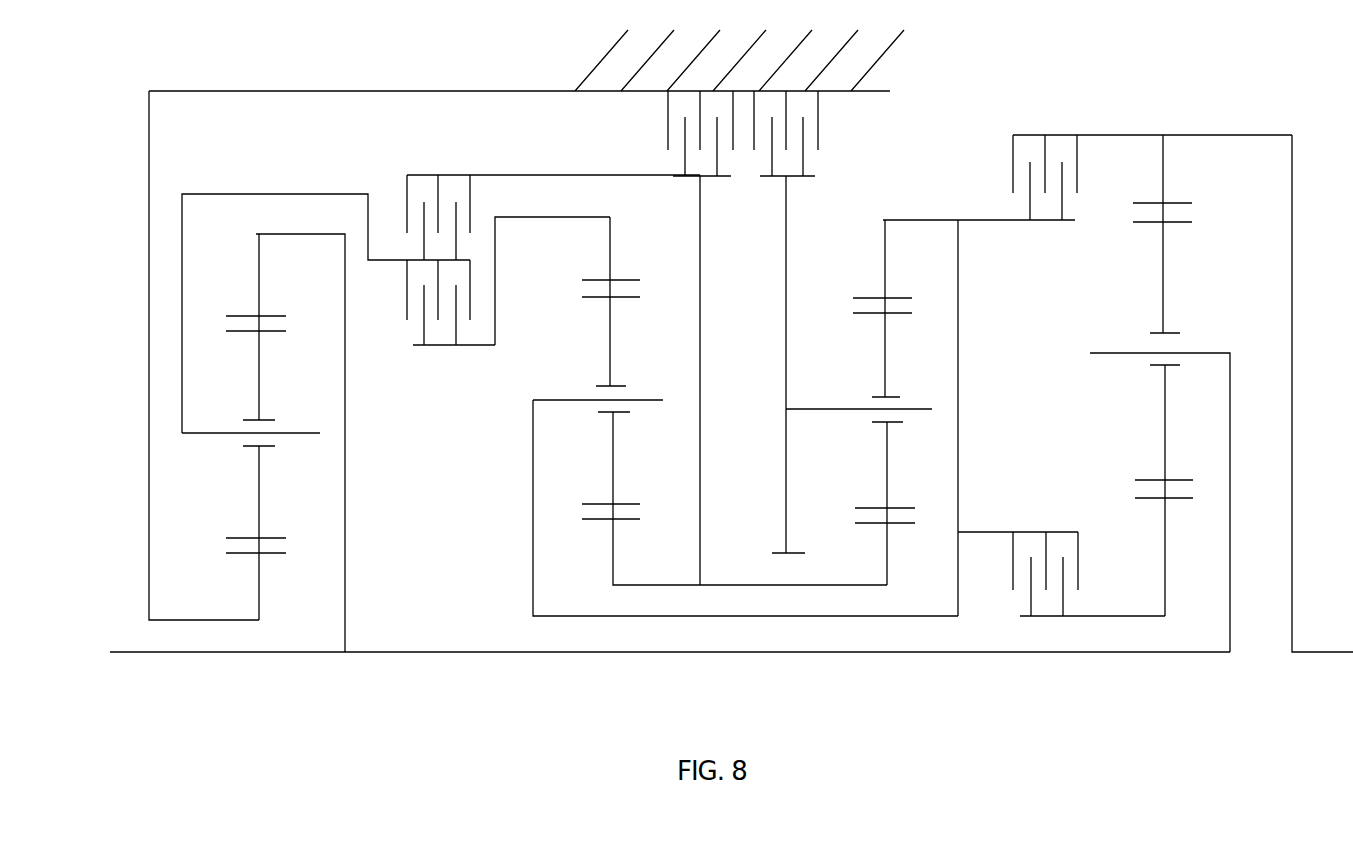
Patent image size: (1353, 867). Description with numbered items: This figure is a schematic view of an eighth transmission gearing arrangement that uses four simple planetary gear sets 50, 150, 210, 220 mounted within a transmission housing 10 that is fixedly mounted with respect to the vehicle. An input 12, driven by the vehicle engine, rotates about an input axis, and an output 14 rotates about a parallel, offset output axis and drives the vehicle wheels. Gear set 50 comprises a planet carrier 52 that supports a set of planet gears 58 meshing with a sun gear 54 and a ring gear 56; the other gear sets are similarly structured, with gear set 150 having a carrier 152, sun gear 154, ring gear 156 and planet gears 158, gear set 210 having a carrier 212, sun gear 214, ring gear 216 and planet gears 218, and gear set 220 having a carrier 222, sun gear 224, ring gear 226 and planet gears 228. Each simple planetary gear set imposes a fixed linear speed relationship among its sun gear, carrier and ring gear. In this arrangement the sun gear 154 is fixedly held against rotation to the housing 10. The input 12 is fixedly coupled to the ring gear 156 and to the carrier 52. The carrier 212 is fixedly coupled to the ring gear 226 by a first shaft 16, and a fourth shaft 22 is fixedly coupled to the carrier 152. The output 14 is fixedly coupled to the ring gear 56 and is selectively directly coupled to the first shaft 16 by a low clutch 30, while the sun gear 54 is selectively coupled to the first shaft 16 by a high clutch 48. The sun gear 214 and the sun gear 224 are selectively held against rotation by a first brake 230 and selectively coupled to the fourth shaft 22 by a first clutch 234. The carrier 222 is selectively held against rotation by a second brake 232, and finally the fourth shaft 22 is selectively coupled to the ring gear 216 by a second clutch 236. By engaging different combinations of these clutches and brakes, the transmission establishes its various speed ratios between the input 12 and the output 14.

The transmission housing 10 is at (608, 52).
The input 12 is at (378, 652).
The output 14 is at (1335, 652).
The first shaft 16 is at (552, 612).
The fourth shaft 22 is at (247, 195).
The low clutch 30 is at (1033, 135).
The high clutch 48 is at (1057, 530).
The planetary gear set 50 is at (1154, 423).
The planet carrier 52 is at (1107, 355).
The sun gear 54 is at (1165, 585).
The ring gear 56 is at (1162, 163).
The planet gears 58 is at (1163, 287).
The planetary gear set 150 is at (248, 472).
The carrier 152 is at (183, 435).
The sun gear 154 is at (259, 575).
The ring gear 156 is at (258, 278).
The planet gears 158 is at (258, 363).
The planetary gear set 210 is at (691, 443).
The carrier 212 is at (540, 397).
The sun gear 214 is at (613, 560).
The ring gear 216 is at (608, 247).
The planet gears 218 is at (612, 345).
The planetary gear set 220 is at (896, 443).
The carrier 222 is at (785, 382).
The sun gear 224 is at (887, 558).
The ring gear 226 is at (885, 258).
The planet gears 228 is at (885, 367).
The first brake 230 is at (668, 122).
The second brake 232 is at (818, 122).
The first clutch 234 is at (422, 175).
The second clutch 236 is at (437, 347).